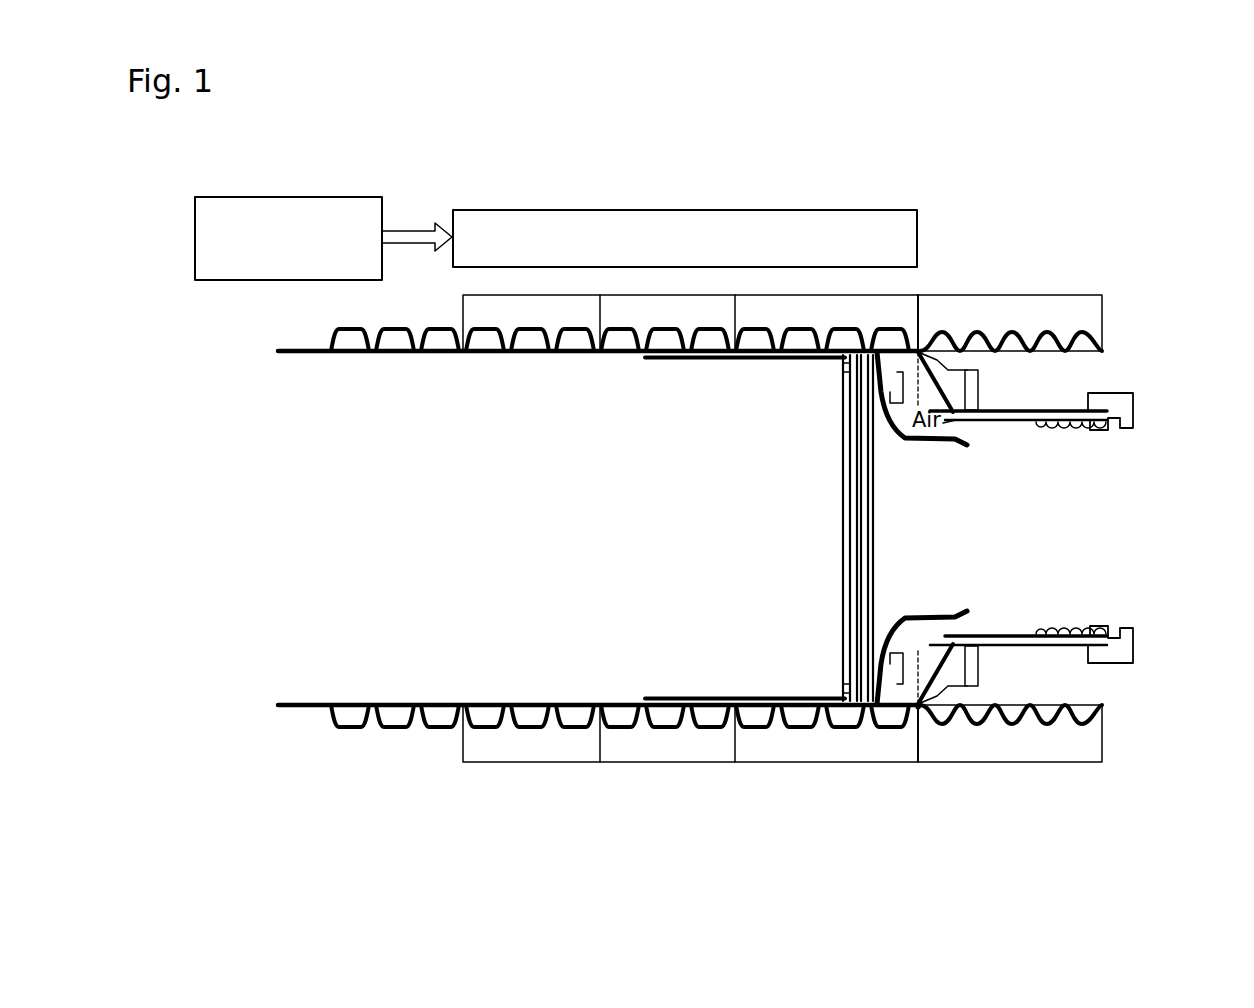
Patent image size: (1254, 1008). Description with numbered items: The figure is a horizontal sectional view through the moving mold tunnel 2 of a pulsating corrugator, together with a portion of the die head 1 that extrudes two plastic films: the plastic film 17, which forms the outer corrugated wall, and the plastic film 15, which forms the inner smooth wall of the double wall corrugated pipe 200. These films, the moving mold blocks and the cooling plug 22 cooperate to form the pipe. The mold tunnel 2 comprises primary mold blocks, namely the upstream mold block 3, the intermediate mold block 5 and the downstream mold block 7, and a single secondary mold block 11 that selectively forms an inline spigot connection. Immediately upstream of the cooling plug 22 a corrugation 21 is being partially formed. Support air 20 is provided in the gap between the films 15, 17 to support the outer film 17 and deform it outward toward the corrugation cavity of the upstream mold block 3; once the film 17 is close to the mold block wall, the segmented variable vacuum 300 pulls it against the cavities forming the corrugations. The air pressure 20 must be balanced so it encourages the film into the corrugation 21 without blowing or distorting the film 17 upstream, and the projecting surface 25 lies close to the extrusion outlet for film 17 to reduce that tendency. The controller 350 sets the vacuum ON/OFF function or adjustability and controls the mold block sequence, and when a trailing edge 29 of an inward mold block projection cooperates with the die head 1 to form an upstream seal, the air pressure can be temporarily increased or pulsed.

The die head 1 is at (1062, 503).
The moving mold tunnel 2 is at (760, 785).
The upstream mold block 3 is at (876, 742).
The intermediate mold block 5 is at (678, 746).
The downstream mold block 7 is at (535, 748).
The secondary mold block 11 is at (1045, 745).
The plastic film (inner wall) 15 is at (943, 613).
The plastic film (outer wall) 17 is at (1008, 632).
The support air 20 is at (982, 411).
The corrugation 21 is at (918, 707).
The cooling plug 22 is at (672, 505).
The projecting surface 25 is at (922, 706).
The trailing edge 29 is at (920, 350).
The double wall corrugated pipe 200 is at (400, 744).
The segmented variable vacuum 300 is at (797, 209).
The controller 350 is at (322, 197).